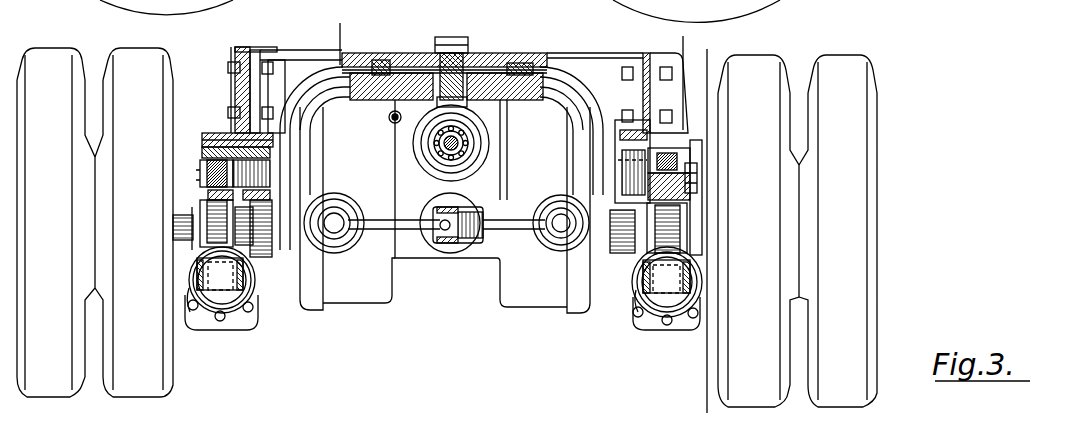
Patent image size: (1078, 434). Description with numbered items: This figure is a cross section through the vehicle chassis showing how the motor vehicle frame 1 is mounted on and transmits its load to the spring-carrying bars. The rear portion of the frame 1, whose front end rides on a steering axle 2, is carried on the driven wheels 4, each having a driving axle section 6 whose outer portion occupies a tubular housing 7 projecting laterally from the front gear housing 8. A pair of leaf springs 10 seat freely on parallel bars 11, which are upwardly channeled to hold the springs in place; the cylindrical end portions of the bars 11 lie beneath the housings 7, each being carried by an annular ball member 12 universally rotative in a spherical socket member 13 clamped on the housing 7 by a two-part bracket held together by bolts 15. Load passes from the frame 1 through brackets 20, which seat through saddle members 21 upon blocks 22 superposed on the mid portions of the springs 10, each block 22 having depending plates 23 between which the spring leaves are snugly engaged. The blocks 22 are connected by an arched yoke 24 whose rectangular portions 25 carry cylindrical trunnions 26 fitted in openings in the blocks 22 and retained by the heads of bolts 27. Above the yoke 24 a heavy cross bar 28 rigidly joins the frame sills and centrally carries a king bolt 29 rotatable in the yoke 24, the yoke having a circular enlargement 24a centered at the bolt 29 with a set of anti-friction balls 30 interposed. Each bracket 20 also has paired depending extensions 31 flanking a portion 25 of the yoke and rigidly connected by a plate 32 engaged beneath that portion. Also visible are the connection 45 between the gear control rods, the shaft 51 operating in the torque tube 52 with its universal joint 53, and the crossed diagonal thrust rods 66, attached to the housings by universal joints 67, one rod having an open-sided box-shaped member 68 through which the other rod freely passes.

The motor vehicle frame 1 is at (255, 50).
The axle 2 is at (683, 36).
The front pair of wheels 4 is at (152, 347).
The driving axle section 6 is at (340, 23).
The tubular housing 7 is at (192, 207).
The front gear housing 8 is at (401, 265).
The leaf spring 10 is at (200, 225).
The bar 11 is at (197, 277).
The annular ball member 12 is at (190, 312).
The spherical socket member 13 is at (187, 288).
The bolts 15 is at (250, 322).
The bracket 20 is at (201, 140).
The saddle member 21 is at (200, 142).
The block 22 is at (202, 153).
The depending plate 23 is at (197, 220).
The arched yoke 24 is at (313, 105).
The circular enlargement 24a is at (518, 100).
The rectangular portion 25 is at (203, 133).
The cylindrical trunnion 26 is at (200, 164).
The bolt 27 is at (739, 167).
The cross bar 28 is at (483, 53).
The king bolt 29 is at (447, 37).
The set of balls 30 is at (382, 60).
The depending extension 31 is at (287, 163).
The plate 32 is at (627, 215).
The connection 45 is at (395, 123).
The shaft 51 is at (440, 145).
The torque tube 52 is at (445, 150).
The universal joint 53 is at (483, 140).
The diagonal rod 66 is at (372, 220).
The joint 67 is at (358, 182).
The box-shaped member 68 is at (470, 208).